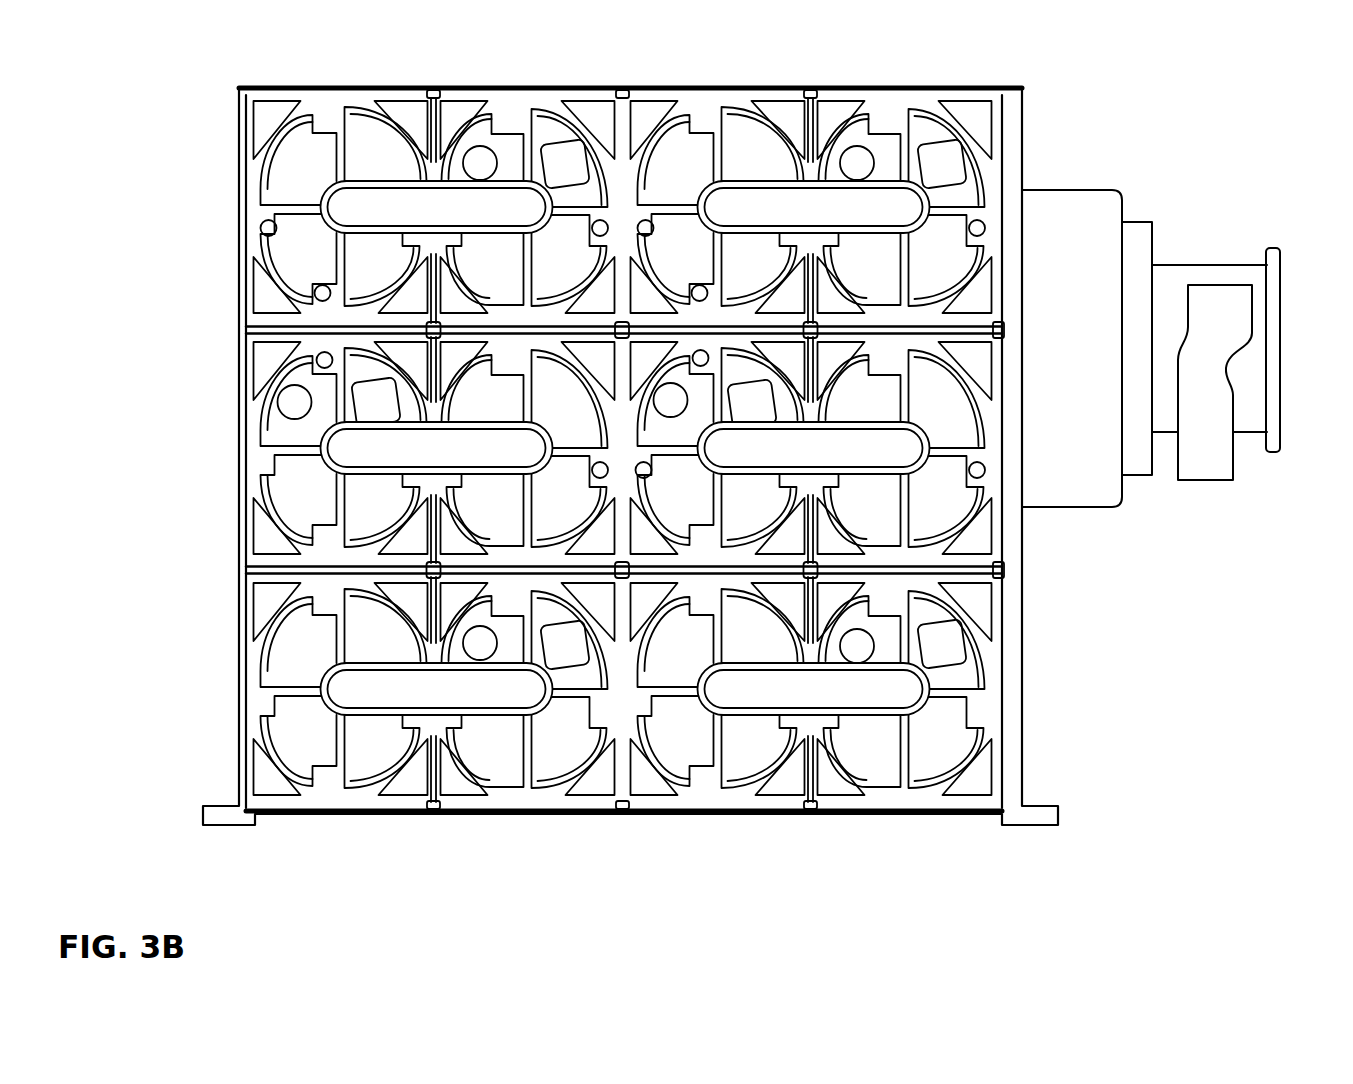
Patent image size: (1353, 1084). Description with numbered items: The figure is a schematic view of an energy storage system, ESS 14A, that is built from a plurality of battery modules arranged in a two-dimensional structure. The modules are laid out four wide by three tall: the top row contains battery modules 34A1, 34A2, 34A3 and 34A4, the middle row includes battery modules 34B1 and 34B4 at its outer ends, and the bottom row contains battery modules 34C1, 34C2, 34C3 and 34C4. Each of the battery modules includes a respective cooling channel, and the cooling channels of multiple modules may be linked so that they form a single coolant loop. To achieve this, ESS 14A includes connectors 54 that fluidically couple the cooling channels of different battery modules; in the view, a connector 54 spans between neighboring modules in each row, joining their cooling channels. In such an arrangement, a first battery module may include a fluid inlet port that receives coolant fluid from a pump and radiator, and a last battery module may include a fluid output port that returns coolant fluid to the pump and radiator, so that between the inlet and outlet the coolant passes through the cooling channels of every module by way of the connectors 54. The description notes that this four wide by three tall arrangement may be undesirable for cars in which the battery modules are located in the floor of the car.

The ESS 14A is at (1252, 152).
The battery module 34A1 is at (290, 150).
The battery module 34A2 is at (463, 118).
The battery module 34A3 is at (660, 118).
The battery module 34A4 is at (853, 118).
The battery module 34B1 is at (286, 368).
The battery module 34B4 is at (972, 518).
The battery module 34C1 is at (282, 626).
The battery module 34C2 is at (486, 790).
The battery module 34C3 is at (671, 784).
The battery module 34C4 is at (862, 790).
The connectors 54 is at (436, 200).